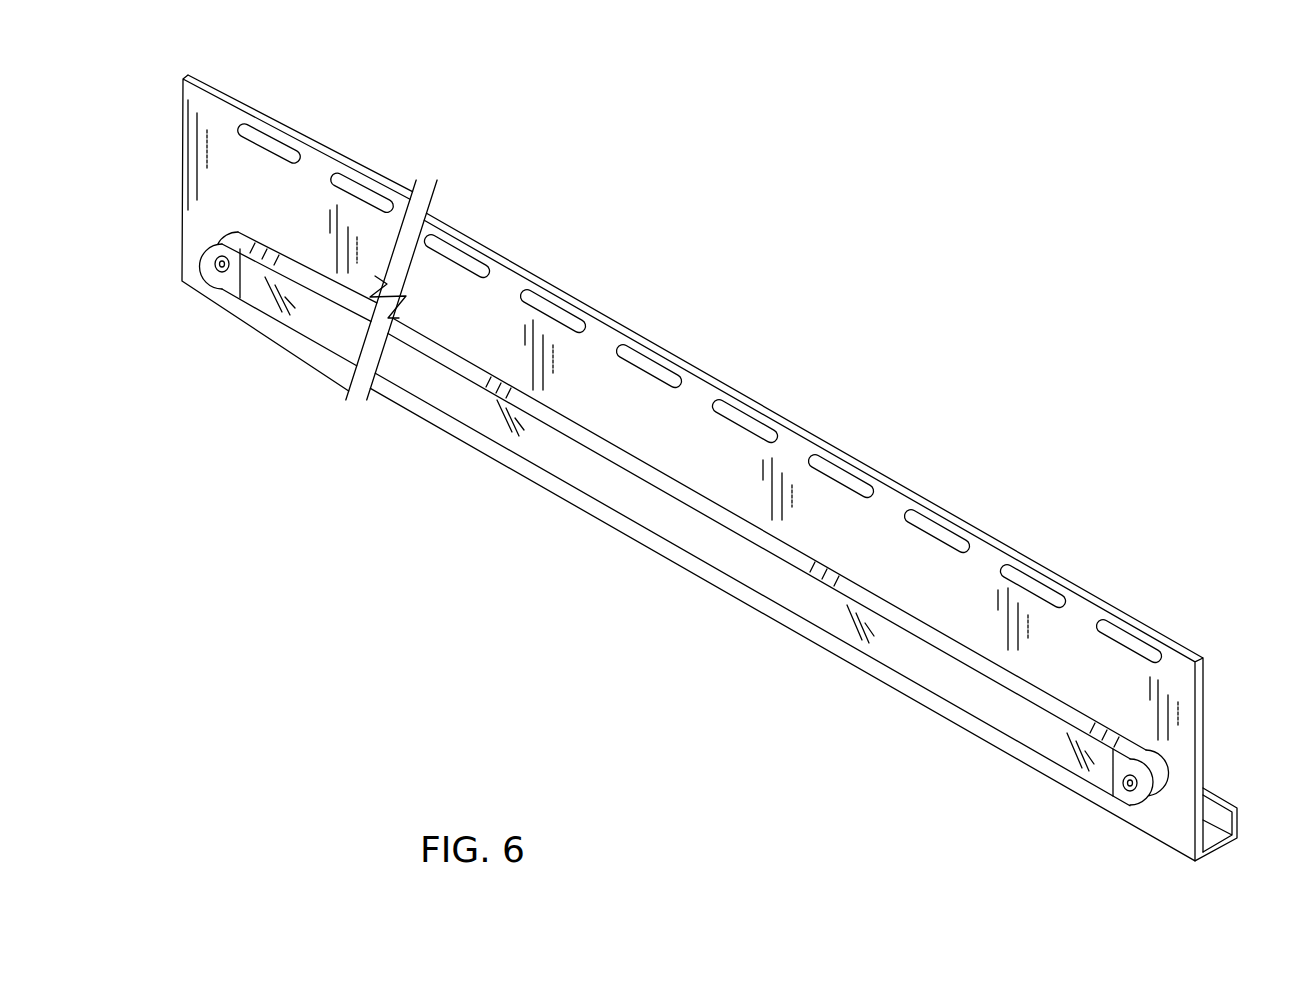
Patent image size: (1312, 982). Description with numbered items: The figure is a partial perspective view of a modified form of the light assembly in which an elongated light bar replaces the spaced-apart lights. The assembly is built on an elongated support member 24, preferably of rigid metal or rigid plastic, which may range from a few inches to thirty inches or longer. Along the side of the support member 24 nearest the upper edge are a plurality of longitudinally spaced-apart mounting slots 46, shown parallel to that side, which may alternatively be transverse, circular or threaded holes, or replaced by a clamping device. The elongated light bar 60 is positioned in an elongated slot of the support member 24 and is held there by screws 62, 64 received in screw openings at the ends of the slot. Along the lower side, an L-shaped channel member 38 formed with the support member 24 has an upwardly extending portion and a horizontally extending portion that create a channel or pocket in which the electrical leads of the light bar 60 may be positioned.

The support member 24 is at (855, 395).
The mounting slots 46 is at (912, 518).
The light bar 60 is at (735, 560).
The screw 62 is at (222, 273).
The screw 64 is at (1128, 791).
The L-shaped channel member 38 is at (1247, 810).